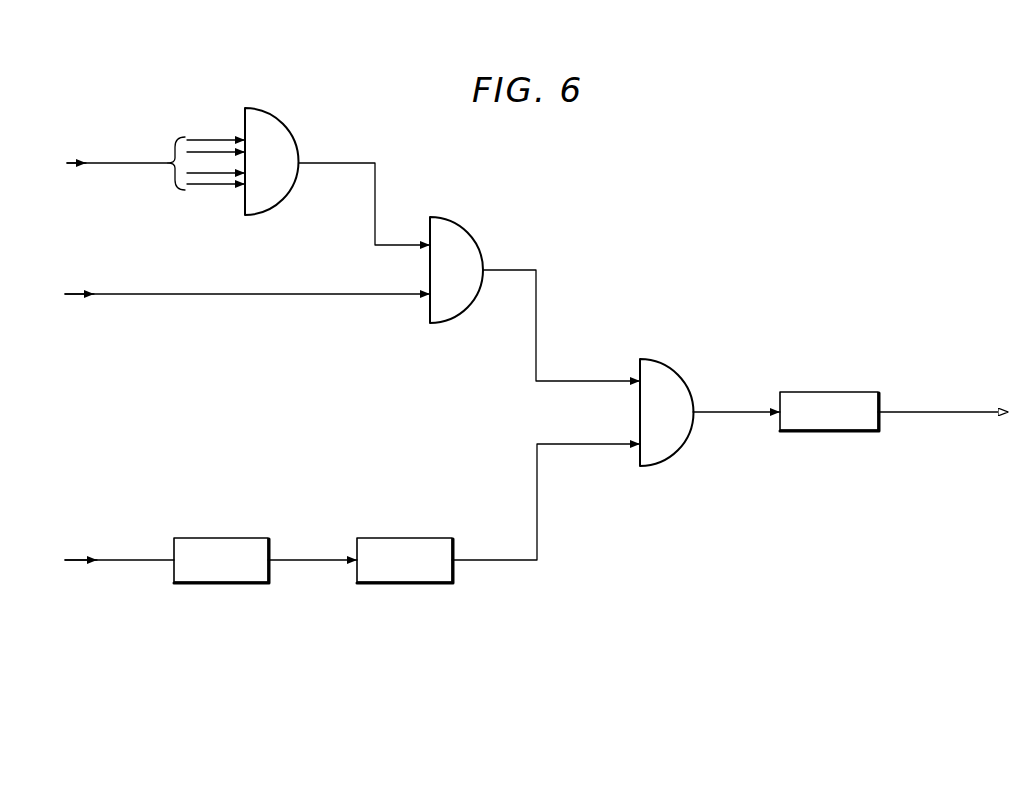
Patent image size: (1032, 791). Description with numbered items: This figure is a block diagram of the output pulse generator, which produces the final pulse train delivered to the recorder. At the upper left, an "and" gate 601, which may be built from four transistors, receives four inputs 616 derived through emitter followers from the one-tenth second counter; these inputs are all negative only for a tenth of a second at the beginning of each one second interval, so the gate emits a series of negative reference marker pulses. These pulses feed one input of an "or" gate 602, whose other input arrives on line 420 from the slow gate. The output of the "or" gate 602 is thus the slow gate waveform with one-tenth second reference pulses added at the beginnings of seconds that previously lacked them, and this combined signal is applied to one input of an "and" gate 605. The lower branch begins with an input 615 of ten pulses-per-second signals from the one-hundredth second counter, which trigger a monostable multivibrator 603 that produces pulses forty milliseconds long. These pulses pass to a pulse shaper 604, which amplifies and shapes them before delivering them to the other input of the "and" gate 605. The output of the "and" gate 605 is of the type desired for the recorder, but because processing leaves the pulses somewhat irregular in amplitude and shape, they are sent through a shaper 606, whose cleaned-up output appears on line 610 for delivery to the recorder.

The "and" gate 601 is at (284, 124).
The "or" gate 602 is at (446, 217).
The monostable multivibrator 603 is at (231, 538).
The pulse shaper 604 is at (406, 538).
The "and" gate 605 is at (657, 359).
The shaper 606 is at (818, 392).
The line 610 is at (942, 410).
The input line 615 is at (138, 560).
The input lines 616 is at (124, 163).
The line 420 is at (175, 294).